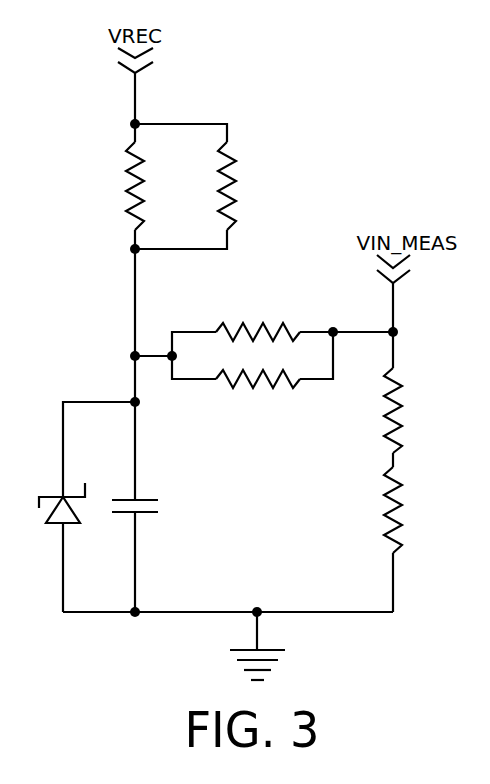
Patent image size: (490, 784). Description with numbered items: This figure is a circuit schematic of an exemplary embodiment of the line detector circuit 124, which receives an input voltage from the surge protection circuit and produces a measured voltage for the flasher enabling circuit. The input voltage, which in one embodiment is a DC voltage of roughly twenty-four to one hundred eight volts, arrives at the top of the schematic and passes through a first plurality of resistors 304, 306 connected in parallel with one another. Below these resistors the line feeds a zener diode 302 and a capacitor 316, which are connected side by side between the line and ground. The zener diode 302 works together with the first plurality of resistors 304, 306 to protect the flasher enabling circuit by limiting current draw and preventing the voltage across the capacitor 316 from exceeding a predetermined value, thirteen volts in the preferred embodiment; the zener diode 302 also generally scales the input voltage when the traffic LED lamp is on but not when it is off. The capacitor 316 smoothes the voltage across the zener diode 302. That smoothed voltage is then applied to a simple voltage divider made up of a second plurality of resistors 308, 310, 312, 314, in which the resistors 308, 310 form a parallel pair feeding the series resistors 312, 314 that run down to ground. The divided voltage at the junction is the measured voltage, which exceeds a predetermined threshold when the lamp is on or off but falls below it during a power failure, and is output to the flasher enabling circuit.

The line detector circuit 124 is at (299, 113).
The zener diode 302 is at (70, 527).
The first plurality of resistors 304 is at (132, 183).
The first plurality of resistors 306 is at (250, 178).
The second plurality of resistors 308 is at (255, 323).
The second plurality of resistors 310 is at (245, 387).
The second plurality of resistors 312 is at (397, 397).
The second plurality of resistors 314 is at (397, 518).
The capacitor 316 is at (162, 502).